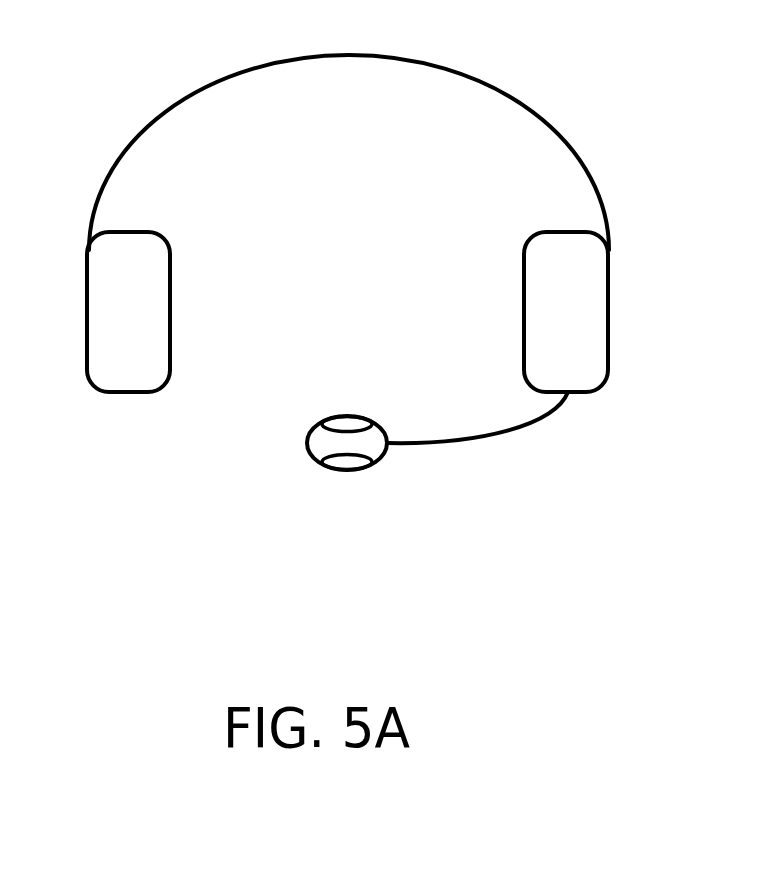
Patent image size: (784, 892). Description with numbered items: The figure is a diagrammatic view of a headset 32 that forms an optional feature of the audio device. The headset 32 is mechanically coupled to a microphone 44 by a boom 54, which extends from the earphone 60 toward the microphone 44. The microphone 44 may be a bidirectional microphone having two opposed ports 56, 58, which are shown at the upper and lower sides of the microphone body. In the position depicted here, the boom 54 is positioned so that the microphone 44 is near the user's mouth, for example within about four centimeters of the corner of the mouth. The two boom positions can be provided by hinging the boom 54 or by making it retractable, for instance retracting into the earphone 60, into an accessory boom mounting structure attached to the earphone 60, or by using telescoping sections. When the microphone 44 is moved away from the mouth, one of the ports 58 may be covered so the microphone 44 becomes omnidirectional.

The headset 32 is at (558, 77).
The microphone 44 is at (313, 457).
The boom 54 is at (427, 448).
The port 56 is at (355, 417).
The port 58 is at (343, 473).
The earphone 60 is at (650, 340).